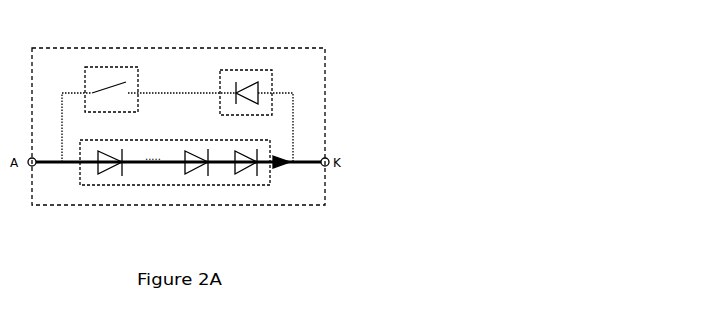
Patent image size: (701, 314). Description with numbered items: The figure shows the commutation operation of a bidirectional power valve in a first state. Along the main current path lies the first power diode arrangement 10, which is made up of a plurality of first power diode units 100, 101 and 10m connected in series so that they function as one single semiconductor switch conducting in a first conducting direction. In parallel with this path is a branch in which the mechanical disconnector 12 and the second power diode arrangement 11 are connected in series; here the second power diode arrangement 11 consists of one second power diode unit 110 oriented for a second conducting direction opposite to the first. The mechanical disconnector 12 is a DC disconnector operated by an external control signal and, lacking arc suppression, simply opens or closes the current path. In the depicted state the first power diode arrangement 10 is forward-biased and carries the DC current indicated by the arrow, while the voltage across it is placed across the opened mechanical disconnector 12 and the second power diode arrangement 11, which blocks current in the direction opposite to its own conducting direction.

The first power diode arrangement 10 is at (265, 185).
The first power diode unit 10m is at (100, 170).
The first power diode unit 101 is at (190, 175).
The first power diode unit 100 is at (238, 175).
The second power diode arrangement 11 is at (262, 70).
The second power diode unit 110 is at (250, 80).
The mechanical disconnector 12 is at (128, 67).